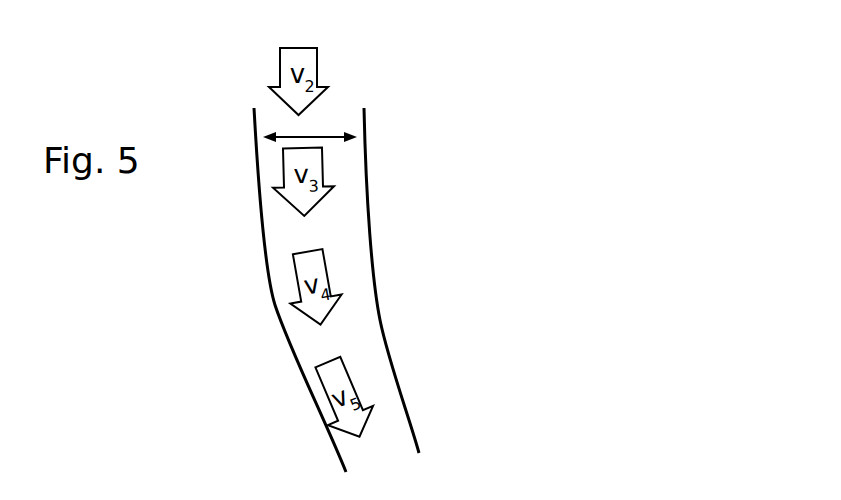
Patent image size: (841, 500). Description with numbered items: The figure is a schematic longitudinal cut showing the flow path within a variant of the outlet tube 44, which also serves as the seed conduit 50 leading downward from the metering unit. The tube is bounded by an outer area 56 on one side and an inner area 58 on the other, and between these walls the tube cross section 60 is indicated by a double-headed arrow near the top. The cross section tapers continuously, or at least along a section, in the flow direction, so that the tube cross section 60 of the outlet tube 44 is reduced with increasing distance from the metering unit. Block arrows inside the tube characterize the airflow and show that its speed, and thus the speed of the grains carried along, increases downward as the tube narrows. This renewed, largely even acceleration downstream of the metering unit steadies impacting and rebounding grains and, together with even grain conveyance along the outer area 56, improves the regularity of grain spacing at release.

The outlet tube 44 is at (394, 156).
The seed conduit 50 is at (324, 290).
The outer area 56 is at (272, 305).
The inner area 58 is at (375, 290).
The tube cross section 60 is at (312, 137).